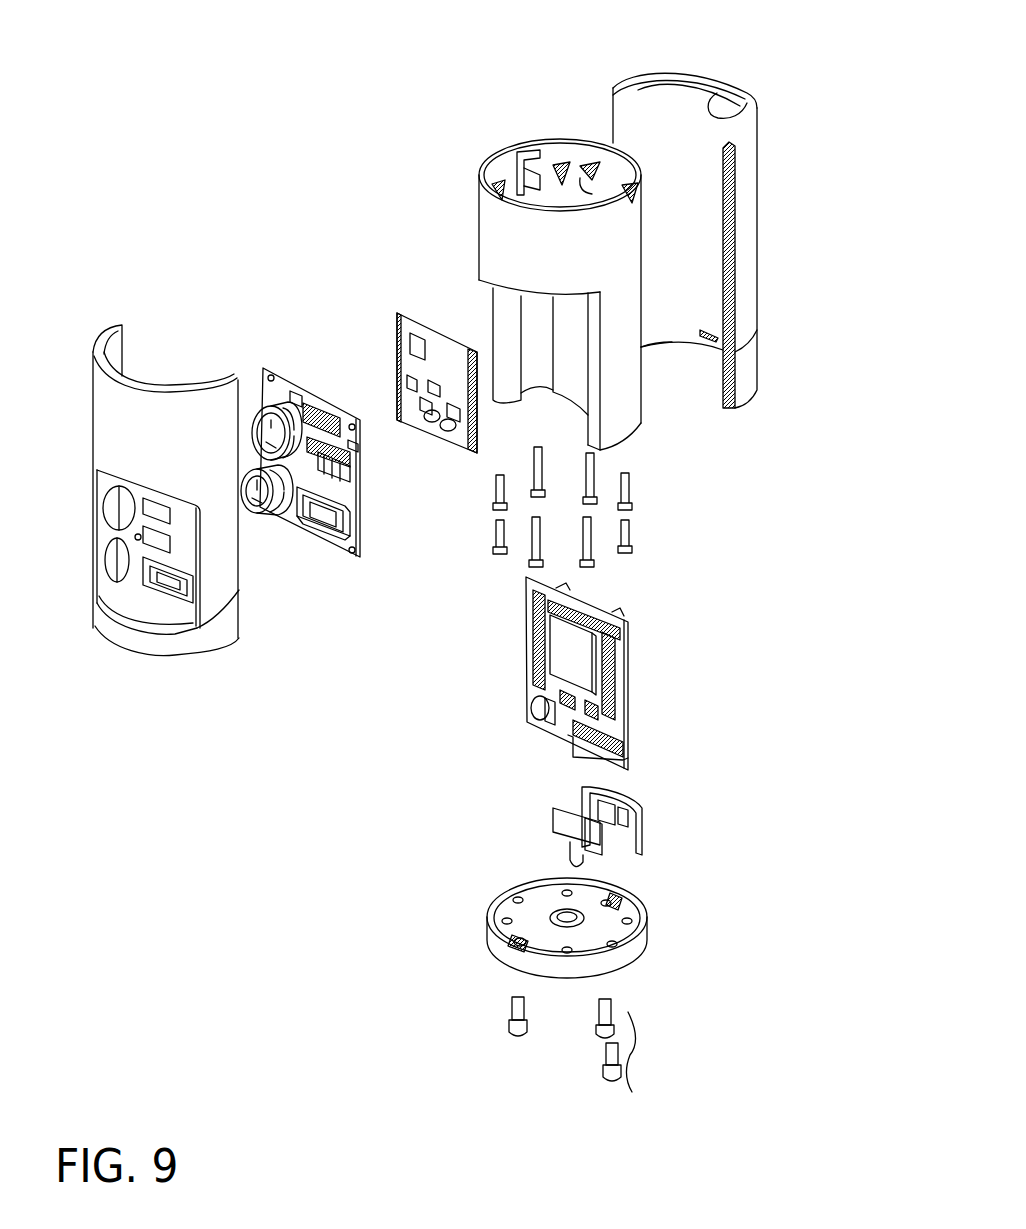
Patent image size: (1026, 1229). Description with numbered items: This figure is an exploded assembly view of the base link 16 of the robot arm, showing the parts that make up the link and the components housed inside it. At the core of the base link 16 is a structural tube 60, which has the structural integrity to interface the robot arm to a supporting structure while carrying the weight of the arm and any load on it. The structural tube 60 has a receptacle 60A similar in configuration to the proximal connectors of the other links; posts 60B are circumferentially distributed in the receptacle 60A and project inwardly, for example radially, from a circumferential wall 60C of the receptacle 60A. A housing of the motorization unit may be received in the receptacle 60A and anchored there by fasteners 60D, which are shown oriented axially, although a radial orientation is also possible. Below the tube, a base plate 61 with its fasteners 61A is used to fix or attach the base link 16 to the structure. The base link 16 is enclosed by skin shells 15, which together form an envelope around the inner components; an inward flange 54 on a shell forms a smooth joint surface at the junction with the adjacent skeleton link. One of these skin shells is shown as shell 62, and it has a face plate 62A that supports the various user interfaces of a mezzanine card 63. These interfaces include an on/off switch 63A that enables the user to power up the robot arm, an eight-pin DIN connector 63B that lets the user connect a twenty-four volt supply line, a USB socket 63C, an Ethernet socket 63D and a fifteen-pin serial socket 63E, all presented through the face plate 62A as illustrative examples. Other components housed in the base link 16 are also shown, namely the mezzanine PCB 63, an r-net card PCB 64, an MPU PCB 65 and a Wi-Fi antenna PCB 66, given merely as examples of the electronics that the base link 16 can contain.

The skin shell 15 is at (776, 230).
The base link 16 is at (314, 188).
The inward flange 54 is at (728, 112).
The structural tube 60 is at (478, 222).
The receptacle 60A is at (567, 358).
The post 60B is at (513, 187).
The circumferential wall 60C is at (567, 200).
The fastener 60D is at (644, 507).
The base plate 61 is at (562, 172).
The fastener 61A is at (642, 1050).
The skin shell 62 is at (78, 412).
The face plate 62A is at (122, 490).
The mezzanine card 63 is at (332, 358).
The on/off switch 63A is at (258, 406).
The 8-pin DIN connector 63B is at (261, 514).
The USB socket 63C is at (345, 436).
The Ethernet socket 63D is at (332, 468).
The 15-pin serial socket 63E is at (340, 556).
The r-net card PCB 64 is at (442, 325).
The MPU PCB 65 is at (642, 690).
The Wi-Fi antenna PCB 66 is at (660, 832).